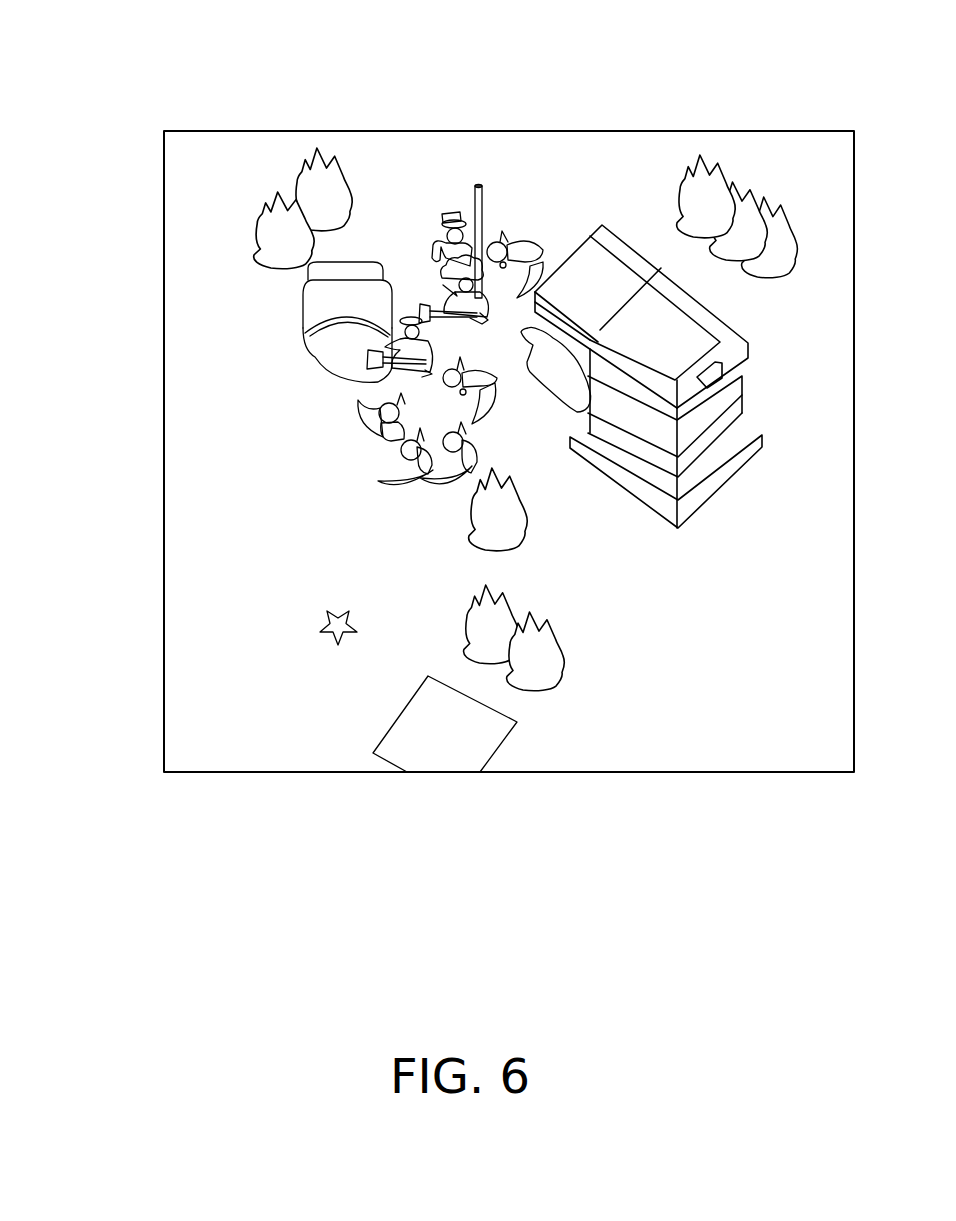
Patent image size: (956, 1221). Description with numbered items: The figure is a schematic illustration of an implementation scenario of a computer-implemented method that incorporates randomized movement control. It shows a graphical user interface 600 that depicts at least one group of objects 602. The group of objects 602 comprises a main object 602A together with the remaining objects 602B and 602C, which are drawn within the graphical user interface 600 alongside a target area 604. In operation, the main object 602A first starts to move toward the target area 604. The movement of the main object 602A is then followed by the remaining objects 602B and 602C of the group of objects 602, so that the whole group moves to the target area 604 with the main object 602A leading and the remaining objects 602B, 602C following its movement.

The graphical user interface 600 is at (207, 160).
The group of objects 602 is at (525, 200).
The main object 602A is at (453, 217).
The remaining object 602B is at (378, 432).
The remaining object 602C is at (400, 340).
The target area 604 is at (338, 645).